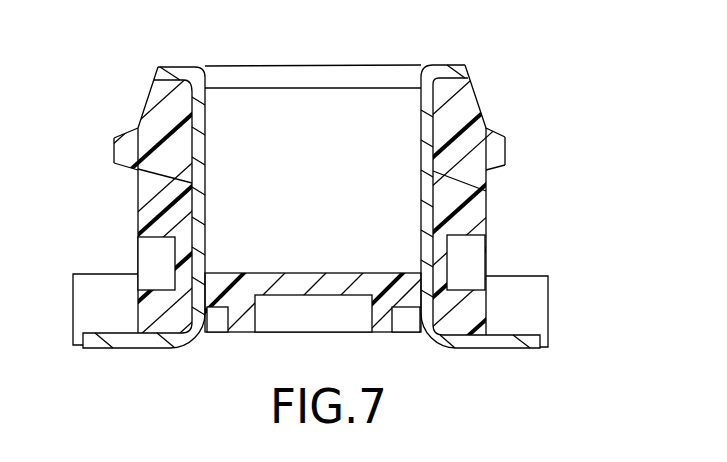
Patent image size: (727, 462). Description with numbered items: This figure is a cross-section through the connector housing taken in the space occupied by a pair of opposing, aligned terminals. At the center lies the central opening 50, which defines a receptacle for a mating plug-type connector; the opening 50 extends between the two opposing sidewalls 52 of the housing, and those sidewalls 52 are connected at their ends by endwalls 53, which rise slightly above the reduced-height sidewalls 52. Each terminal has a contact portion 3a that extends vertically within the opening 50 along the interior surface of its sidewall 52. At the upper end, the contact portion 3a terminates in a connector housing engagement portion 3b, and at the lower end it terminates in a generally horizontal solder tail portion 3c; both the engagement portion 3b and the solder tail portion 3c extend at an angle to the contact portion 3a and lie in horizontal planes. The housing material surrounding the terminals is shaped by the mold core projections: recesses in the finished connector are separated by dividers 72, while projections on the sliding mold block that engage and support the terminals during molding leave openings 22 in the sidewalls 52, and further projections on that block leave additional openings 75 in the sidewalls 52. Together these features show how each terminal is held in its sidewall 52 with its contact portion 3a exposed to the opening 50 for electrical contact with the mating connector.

The contact portion 3a is at (427, 185).
The connector housing engagement portion 3b is at (445, 64).
The solder tail portion 3c is at (510, 348).
The opening 22 is at (162, 190).
The divider 72 is at (162, 110).
The sidewall 52 is at (133, 172).
The endwall 53 is at (323, 220).
The central opening 50 is at (318, 98).
The opening 75 is at (163, 263).